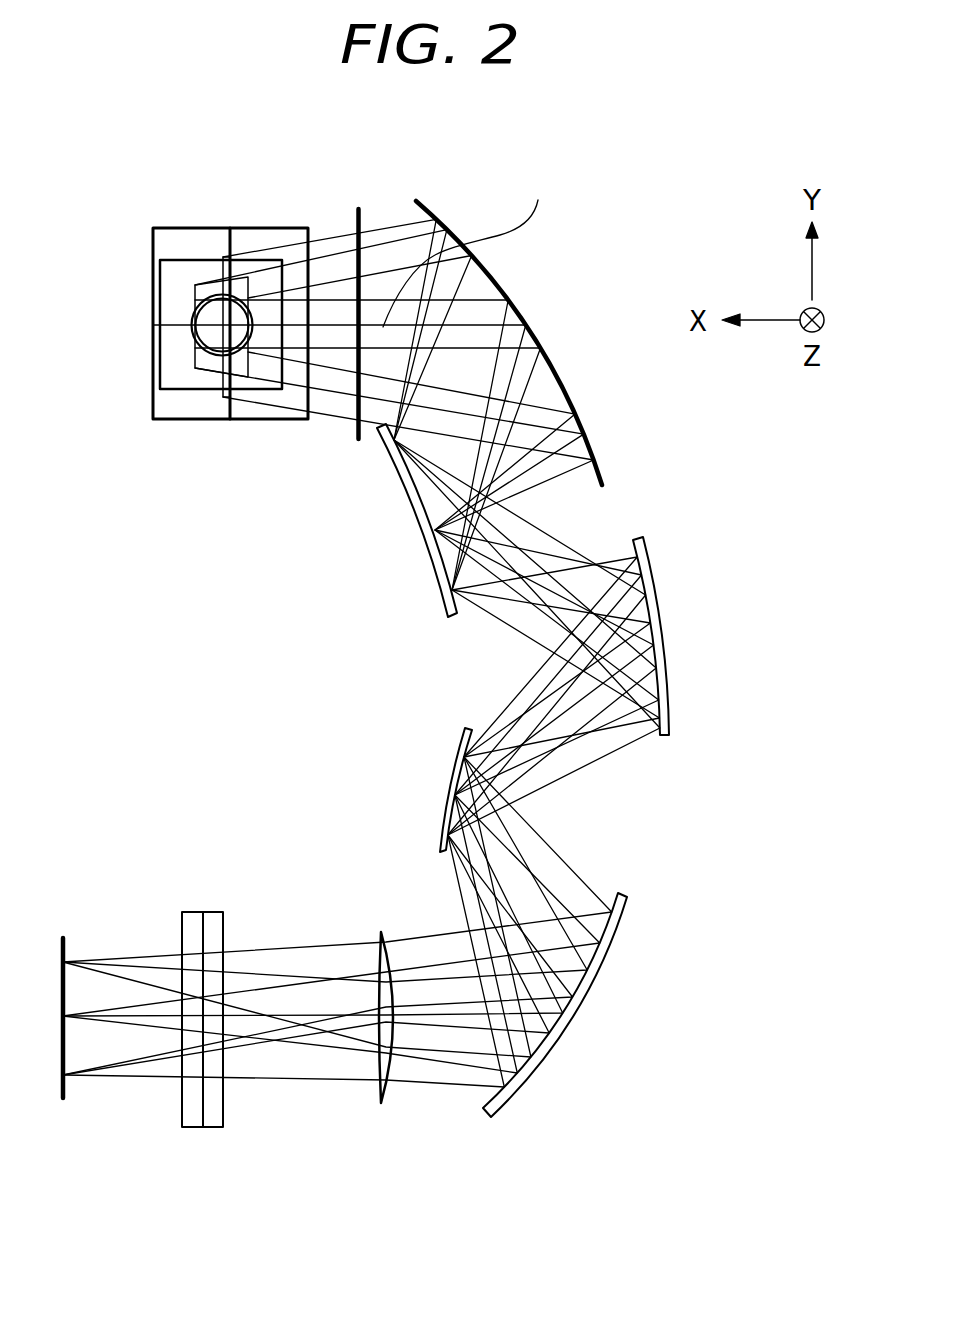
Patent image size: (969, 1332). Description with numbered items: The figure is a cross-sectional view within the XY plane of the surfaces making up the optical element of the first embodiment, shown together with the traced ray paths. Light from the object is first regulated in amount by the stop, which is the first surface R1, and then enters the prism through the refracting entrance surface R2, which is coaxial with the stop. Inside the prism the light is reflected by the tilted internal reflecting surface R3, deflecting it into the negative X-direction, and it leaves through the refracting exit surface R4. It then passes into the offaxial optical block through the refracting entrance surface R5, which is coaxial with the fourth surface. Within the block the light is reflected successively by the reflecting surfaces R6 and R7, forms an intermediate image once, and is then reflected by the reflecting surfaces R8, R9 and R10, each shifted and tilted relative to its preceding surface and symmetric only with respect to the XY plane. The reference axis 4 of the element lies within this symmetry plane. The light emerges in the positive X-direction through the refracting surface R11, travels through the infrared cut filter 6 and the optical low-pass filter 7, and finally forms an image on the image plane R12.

The first surface (stop) R1 is at (205, 298).
The second surface (refracting entrance surface) R2 is at (177, 260).
The third surface (reflecting surface) R3 is at (268, 228).
The fourth surface (refracting exit surface) R4 is at (420, 297).
The fifth surface (refracting entrance surface) R5 is at (361, 220).
The reference axis 4 is at (464, 248).
The sixth surface (reflecting surface) R6 is at (493, 280).
The seventh surface (reflecting surface) R7 is at (405, 502).
The eighth surface (reflecting surface) R8 is at (656, 592).
The ninth surface (reflecting surface) R9 is at (450, 808).
The tenth surface (reflecting surface) R10 is at (580, 1000).
The eleventh surface (refracting surface) R11 is at (380, 933).
The twelfth surface (image plane) R12 is at (65, 940).
The infrared cut filter 6 is at (215, 1128).
The optical low-pass filter 7 is at (187, 1128).